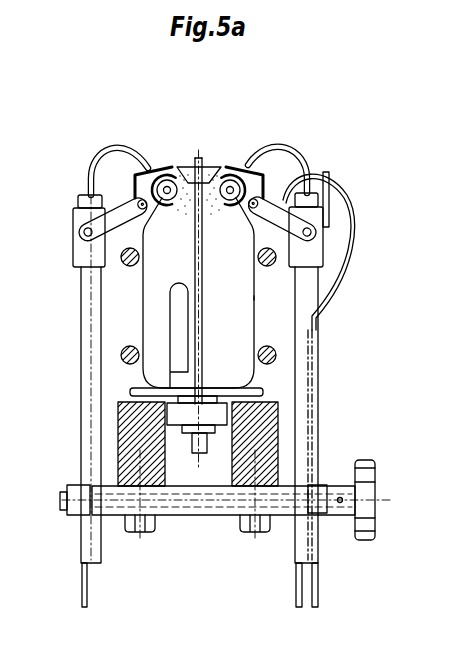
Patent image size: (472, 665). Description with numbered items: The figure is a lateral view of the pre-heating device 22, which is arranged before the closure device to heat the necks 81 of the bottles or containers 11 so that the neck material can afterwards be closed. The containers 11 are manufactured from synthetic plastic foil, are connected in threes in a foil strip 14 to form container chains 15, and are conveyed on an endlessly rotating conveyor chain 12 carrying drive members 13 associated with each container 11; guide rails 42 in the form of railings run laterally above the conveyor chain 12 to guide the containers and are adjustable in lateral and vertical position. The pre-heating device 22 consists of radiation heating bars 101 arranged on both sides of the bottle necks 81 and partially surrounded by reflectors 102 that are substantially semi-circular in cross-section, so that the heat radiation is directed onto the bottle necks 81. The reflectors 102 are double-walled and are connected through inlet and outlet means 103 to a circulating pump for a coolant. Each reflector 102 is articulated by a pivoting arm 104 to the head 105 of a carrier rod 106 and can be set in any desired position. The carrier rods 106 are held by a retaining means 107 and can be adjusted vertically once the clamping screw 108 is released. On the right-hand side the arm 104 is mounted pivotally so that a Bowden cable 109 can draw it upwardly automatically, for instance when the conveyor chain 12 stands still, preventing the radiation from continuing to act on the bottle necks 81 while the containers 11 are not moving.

The container 11 is at (143, 289).
The conveyor chain 12 is at (192, 468).
The drive member 13 is at (170, 310).
The foil strip 14 is at (205, 321).
The container chain 15 is at (268, 296).
The pre-heating device 22 is at (340, 160).
The guide rail 42 is at (140, 257).
The bottle neck 81 is at (197, 166).
The radiation heating bar 101 is at (218, 166).
The reflector 102 is at (177, 166).
The inlet and outlet means 103 is at (105, 152).
The pivoting arm 104 is at (108, 218).
The head 105 is at (86, 258).
The carrier rod 106 is at (88, 428).
The retaining means 107 is at (213, 508).
The clamping screw 108 is at (368, 485).
The Bowden cable 109 is at (343, 185).